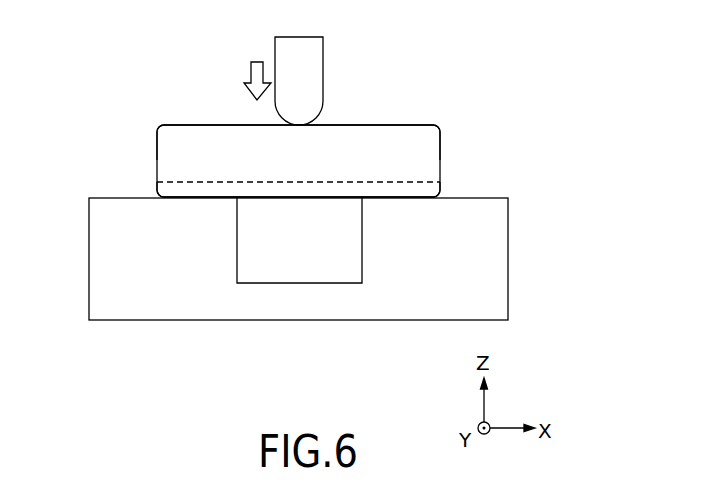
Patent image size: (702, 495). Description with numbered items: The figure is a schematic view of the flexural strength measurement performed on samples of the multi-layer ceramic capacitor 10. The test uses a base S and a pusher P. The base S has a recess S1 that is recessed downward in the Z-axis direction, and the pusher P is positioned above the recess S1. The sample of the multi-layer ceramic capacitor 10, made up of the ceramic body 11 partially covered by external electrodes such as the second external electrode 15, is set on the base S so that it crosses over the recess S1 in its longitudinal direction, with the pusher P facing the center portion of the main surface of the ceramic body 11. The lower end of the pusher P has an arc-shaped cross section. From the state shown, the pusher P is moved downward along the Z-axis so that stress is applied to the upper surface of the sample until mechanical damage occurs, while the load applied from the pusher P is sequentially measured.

The multi-layer ceramic capacitor 10 is at (411, 93).
The ceramic body 11 is at (383, 142).
The second external electrode 15 is at (217, 133).
The pusher P is at (315, 90).
The base S is at (180, 270).
The recess S1 is at (318, 257).